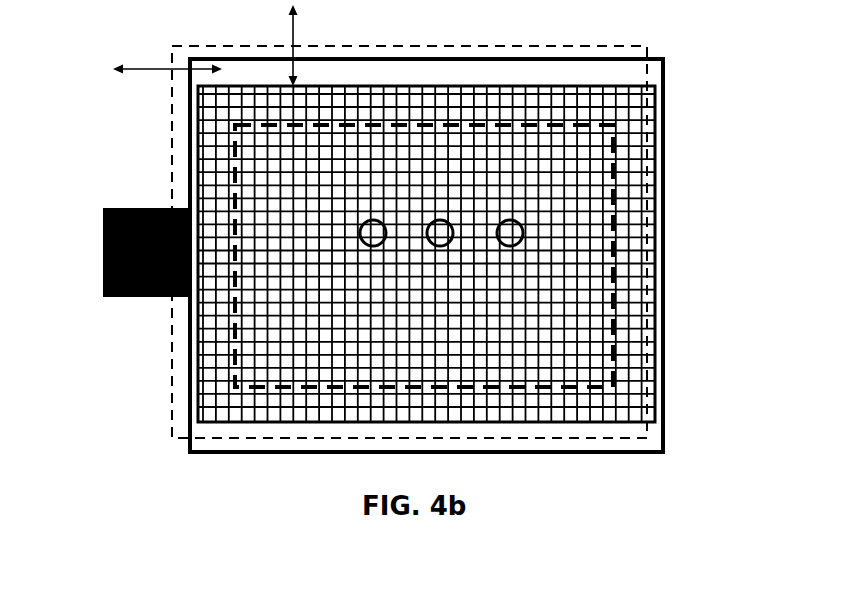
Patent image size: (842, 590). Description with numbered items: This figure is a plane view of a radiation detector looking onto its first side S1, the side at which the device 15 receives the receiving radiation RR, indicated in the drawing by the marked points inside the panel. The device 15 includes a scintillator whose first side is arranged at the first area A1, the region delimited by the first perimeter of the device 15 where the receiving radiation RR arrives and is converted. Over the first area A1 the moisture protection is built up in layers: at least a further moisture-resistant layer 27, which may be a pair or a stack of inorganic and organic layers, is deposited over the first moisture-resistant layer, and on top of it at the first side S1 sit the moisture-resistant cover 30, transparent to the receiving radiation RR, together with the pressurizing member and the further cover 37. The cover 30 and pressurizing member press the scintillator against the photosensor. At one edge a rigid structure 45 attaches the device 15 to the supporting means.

The moisture-resistant cover 30 is at (172, 60).
The further cover 37 is at (665, 60).
The further moisture-resistant layer 27 is at (633, 145).
The device 15 is at (655, 350).
The rigid structure 45 is at (103, 273).
The first side S1 is at (138, 168).
The receiving radiation RR is at (493, 216).
The first area A1 is at (424, 256).